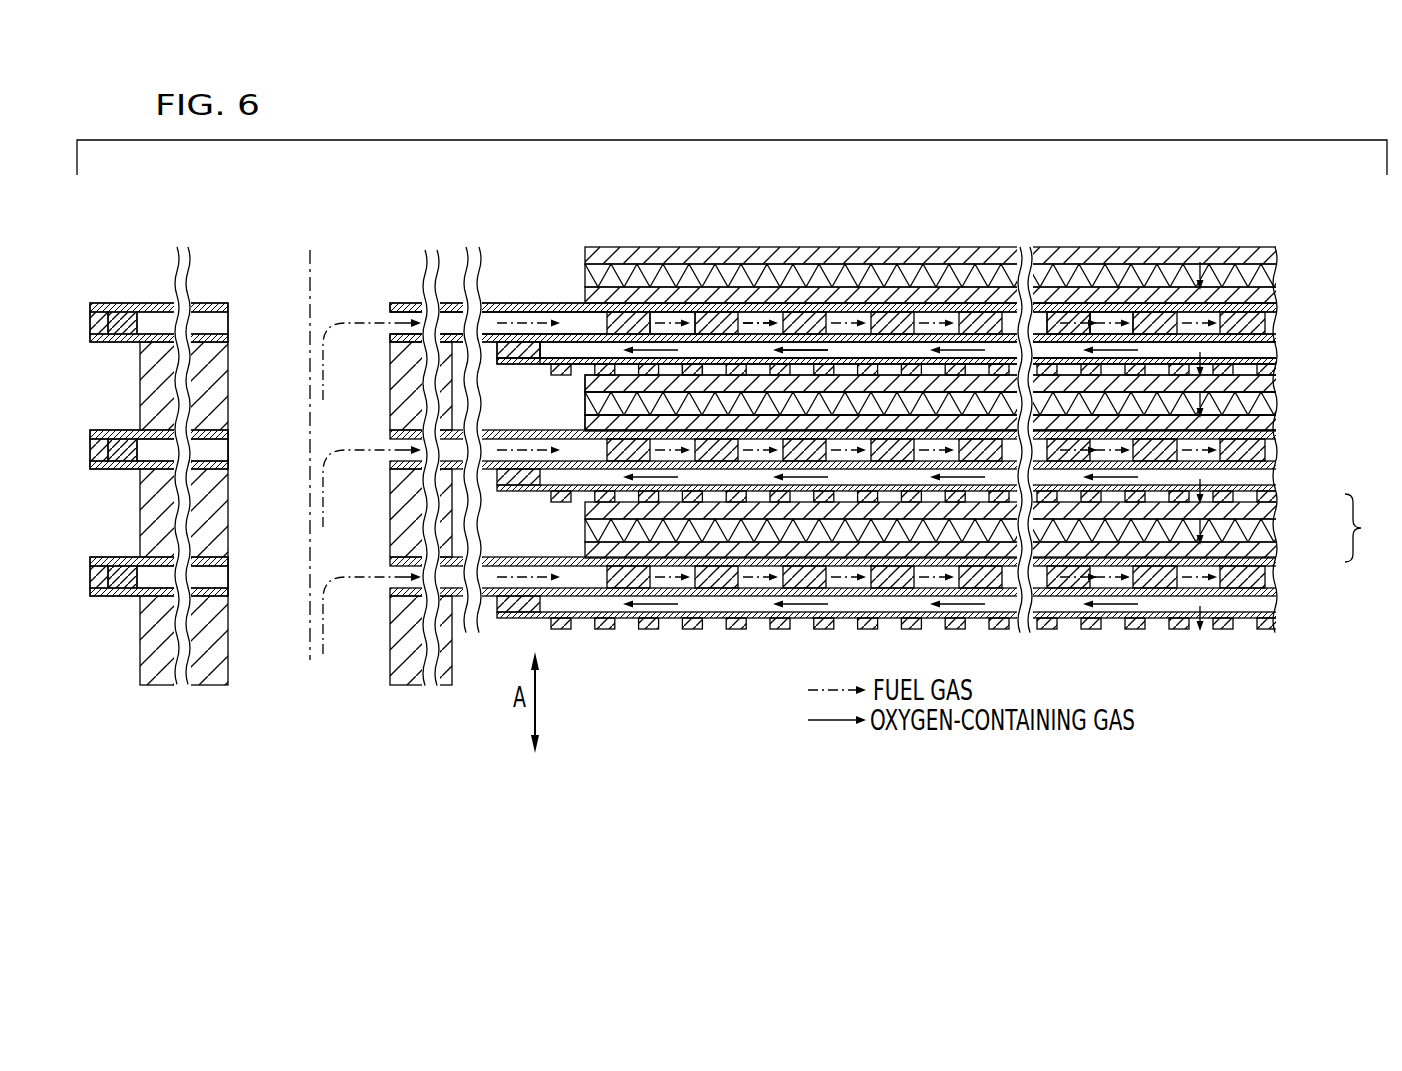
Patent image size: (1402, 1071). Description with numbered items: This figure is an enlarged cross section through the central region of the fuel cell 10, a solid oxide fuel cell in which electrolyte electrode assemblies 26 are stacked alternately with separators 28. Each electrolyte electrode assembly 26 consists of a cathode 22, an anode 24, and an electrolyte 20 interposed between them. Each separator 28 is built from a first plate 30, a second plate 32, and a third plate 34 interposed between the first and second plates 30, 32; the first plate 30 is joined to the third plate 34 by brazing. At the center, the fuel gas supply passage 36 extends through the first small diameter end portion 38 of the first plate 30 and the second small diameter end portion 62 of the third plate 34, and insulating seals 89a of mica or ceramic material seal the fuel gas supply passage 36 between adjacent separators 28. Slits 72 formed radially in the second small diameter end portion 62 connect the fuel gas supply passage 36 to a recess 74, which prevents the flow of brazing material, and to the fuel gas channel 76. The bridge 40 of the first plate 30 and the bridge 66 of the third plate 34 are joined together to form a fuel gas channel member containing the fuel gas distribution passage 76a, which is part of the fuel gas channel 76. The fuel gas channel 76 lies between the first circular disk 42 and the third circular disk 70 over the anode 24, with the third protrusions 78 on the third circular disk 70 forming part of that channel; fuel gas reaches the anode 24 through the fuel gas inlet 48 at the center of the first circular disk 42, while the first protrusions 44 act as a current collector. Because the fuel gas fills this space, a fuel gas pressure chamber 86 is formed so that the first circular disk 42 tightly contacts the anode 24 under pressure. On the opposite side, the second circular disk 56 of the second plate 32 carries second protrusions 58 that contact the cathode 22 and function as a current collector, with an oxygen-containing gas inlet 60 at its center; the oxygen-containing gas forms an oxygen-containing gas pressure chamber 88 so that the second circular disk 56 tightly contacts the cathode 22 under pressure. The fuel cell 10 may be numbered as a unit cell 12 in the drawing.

The fuel cell 10 is at (1366, 528).
The fuel cell 12 is at (364, 211).
The electrolyte 20 is at (1265, 407).
The cathode 22 is at (1265, 385).
The anode 24 is at (1265, 428).
The electrolyte electrode assembly 26 is at (1283, 278).
The separator 28 is at (578, 190).
The first plate 30 is at (492, 303).
The second plate 32 is at (581, 350).
The third plate 34 is at (535, 330).
The fuel gas supply passage 36 is at (276, 326).
The first small diameter end portion 38 is at (151, 314).
The bridge 40 is at (446, 258).
The first circular disk 42 is at (1122, 301).
The first protrusion 44 is at (1068, 325).
The fuel gas inlet 48 is at (1200, 262).
The second circular disk 56 is at (712, 364).
The second protrusion 58 is at (868, 358).
The oxygen-containing gas inlet 60 is at (1268, 366).
The second small diameter end portion 62 is at (200, 322).
The bridge 66 is at (393, 339).
The third circular disk 70 is at (1238, 343).
The slit 72 is at (150, 325).
The recess 74 is at (119, 304).
The fuel gas channel 76 is at (656, 329).
The fuel gas distribution passage 76a is at (413, 308).
The third protrusion 78 is at (960, 358).
The fuel gas pressure chamber 86 is at (758, 325).
The oxygen-containing gas pressure chamber 88 is at (848, 350).
The insulating seal 89a is at (148, 521).